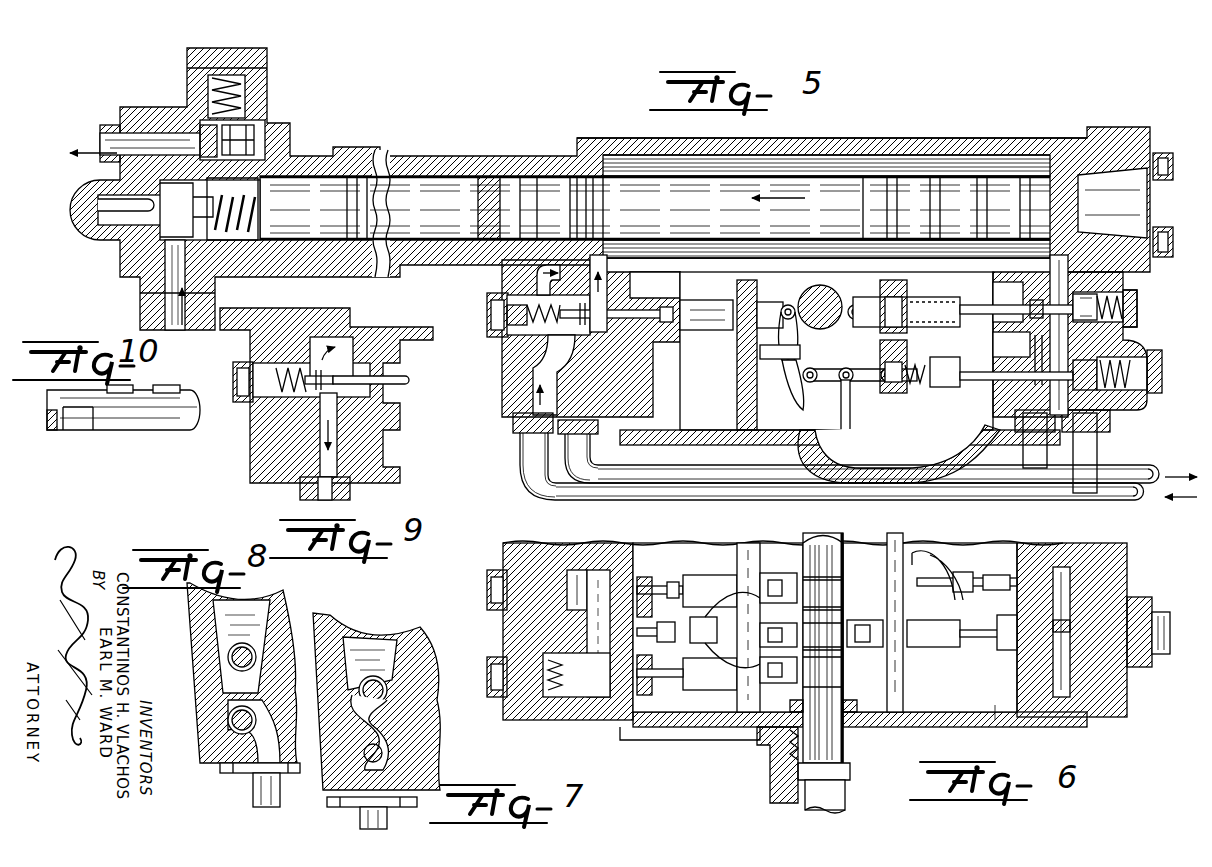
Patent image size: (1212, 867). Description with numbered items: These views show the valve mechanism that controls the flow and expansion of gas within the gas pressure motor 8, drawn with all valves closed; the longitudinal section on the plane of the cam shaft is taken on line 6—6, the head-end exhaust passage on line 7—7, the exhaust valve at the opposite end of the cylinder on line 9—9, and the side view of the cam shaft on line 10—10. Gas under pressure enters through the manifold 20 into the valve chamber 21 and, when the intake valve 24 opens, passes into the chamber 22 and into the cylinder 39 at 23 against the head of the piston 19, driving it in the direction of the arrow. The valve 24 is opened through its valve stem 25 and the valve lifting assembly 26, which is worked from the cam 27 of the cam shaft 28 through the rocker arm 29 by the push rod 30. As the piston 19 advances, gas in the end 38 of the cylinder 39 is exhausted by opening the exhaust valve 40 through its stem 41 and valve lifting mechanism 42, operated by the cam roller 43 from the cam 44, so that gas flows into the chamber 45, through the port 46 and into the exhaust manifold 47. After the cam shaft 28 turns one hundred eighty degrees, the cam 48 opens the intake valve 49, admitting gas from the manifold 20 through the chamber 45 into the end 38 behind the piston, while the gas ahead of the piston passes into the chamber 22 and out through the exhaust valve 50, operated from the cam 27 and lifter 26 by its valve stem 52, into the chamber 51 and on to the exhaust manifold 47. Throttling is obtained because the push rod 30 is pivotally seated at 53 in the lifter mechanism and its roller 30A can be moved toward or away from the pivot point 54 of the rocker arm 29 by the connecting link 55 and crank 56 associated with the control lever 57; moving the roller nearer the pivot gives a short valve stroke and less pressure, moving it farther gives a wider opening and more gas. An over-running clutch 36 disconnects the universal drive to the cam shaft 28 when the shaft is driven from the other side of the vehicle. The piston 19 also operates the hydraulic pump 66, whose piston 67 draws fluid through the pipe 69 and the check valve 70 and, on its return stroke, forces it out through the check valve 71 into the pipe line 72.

In FIG. 5, the section line 6— 6 is at (463, 307).
In FIG. 5, the section line 7— 7 is at (1018, 222).
In FIG. 5, the gas pressure motor 8 is at (1007, 203).
In FIG. 6, the section line 9— 9 is at (662, 553).
In FIG. 6, the section line 10— 10 is at (818, 553).
In FIG. 5, the piston 19 is at (955, 177).
In FIG. 5, the manifold 20 is at (518, 460).
In FIG. 8, the manifold 20 is at (253, 788).
In FIG. 5, the valve chamber 21 is at (1120, 350).
In FIG. 8, the valve chamber 21 is at (233, 717).
In FIG. 5, the chamber 22 is at (1058, 277).
In FIG. 6, the chamber 22 is at (1060, 577).
In FIG. 7, the chamber 22 is at (355, 652).
In FIG. 8, the chamber 22 is at (223, 637).
In FIG. 5, the cylinder inlet location 23 is at (1062, 223).
In FIG. 5, the intake valve 24 is at (1133, 390).
In FIG. 8, the intake valve 24 is at (230, 728).
In FIG. 5, the valve stem 25 is at (990, 368).
In FIG. 7, the valve stem 25 is at (365, 753).
In FIG. 5, the valve lifting assembly 26 is at (913, 300).
In FIG. 6, the valve lifting assembly 26 is at (937, 640).
In FIG. 5, the cam 27 is at (813, 290).
In FIG. 6, the cam 27 is at (828, 642).
In FIG. 10, the cam 27 is at (130, 384).
In FIG. 5, the cam shaft 28 is at (838, 297).
In FIG. 6, the cam shaft 28 is at (772, 748).
In FIG. 10, the cam shaft 28 is at (136, 425).
In FIG. 5, the rocker arm 29 is at (782, 375).
In FIG. 5, the push rod 30 is at (836, 382).
In FIG. 5, the roller 30A is at (792, 380).
In FIG. 6, the over-running clutch 36 is at (808, 795).
In FIG. 5, the end of the cylinder 38 is at (630, 168).
In FIG. 5, the cylinder 39 is at (845, 138).
In FIG. 6, the exhaust valve 40 is at (578, 585).
In FIG. 9, the exhaust valve 40 is at (250, 433).
In FIG. 6, the valve stem 41 is at (670, 583).
In FIG. 9, the valve stem 41 is at (405, 380).
In FIG. 6, the valve lifting mechanism 42 is at (712, 583).
In FIG. 6, the cam roller 43 is at (792, 587).
In FIG. 6, the cam 44 is at (823, 558).
In FIG. 10, the cam 44 is at (172, 386).
In FIG. 5, the chamber 45 is at (603, 291).
In FIG. 6, the chamber 45 is at (598, 593).
In FIG. 9, the chamber 45 is at (348, 333).
In FIG. 5, the port 46 is at (637, 388).
In FIG. 9, the port 46 is at (327, 457).
In FIG. 5, the exhaust manifold 47 is at (577, 470).
In FIG. 7, the exhaust manifold 47 is at (358, 820).
In FIG. 5, the cam 48 is at (832, 323).
In FIG. 10, the cam 48 is at (75, 433).
In FIG. 5, the intake valve 49 is at (503, 362).
In FIG. 6, the intake valve 49 is at (548, 695).
In FIG. 5, the exhaust valve 50 is at (1053, 310).
In FIG. 6, the exhaust valve 50 is at (1062, 640).
In FIG. 7, the exhaust valve 50 is at (388, 693).
In FIG. 8, the exhaust valve 50 is at (252, 662).
In FIG. 5, the chamber 51 is at (1030, 345).
In FIG. 7, the chamber 51 is at (385, 728).
In FIG. 5, the valve stem 52 is at (986, 308).
In FIG. 6, the valve stem 52 is at (988, 645).
In FIG. 5, the pivot seat 53 is at (882, 383).
In FIG. 5, the pivot point 54 is at (780, 357).
In FIG. 5, the connecting link 55 is at (841, 423).
In FIG. 5, the crank 56 is at (880, 447).
In FIG. 5, the control lever 57 is at (913, 458).
In FIG. 5, the hydraulic pump 66 is at (410, 162).
In FIG. 5, the piston 67 is at (451, 192).
In FIG. 5, the pipe 69 is at (160, 313).
In FIG. 5, the check valve 70 is at (200, 213).
In FIG. 5, the check valve 71 is at (237, 145).
In FIG. 5, the pipe line 72 is at (100, 138).